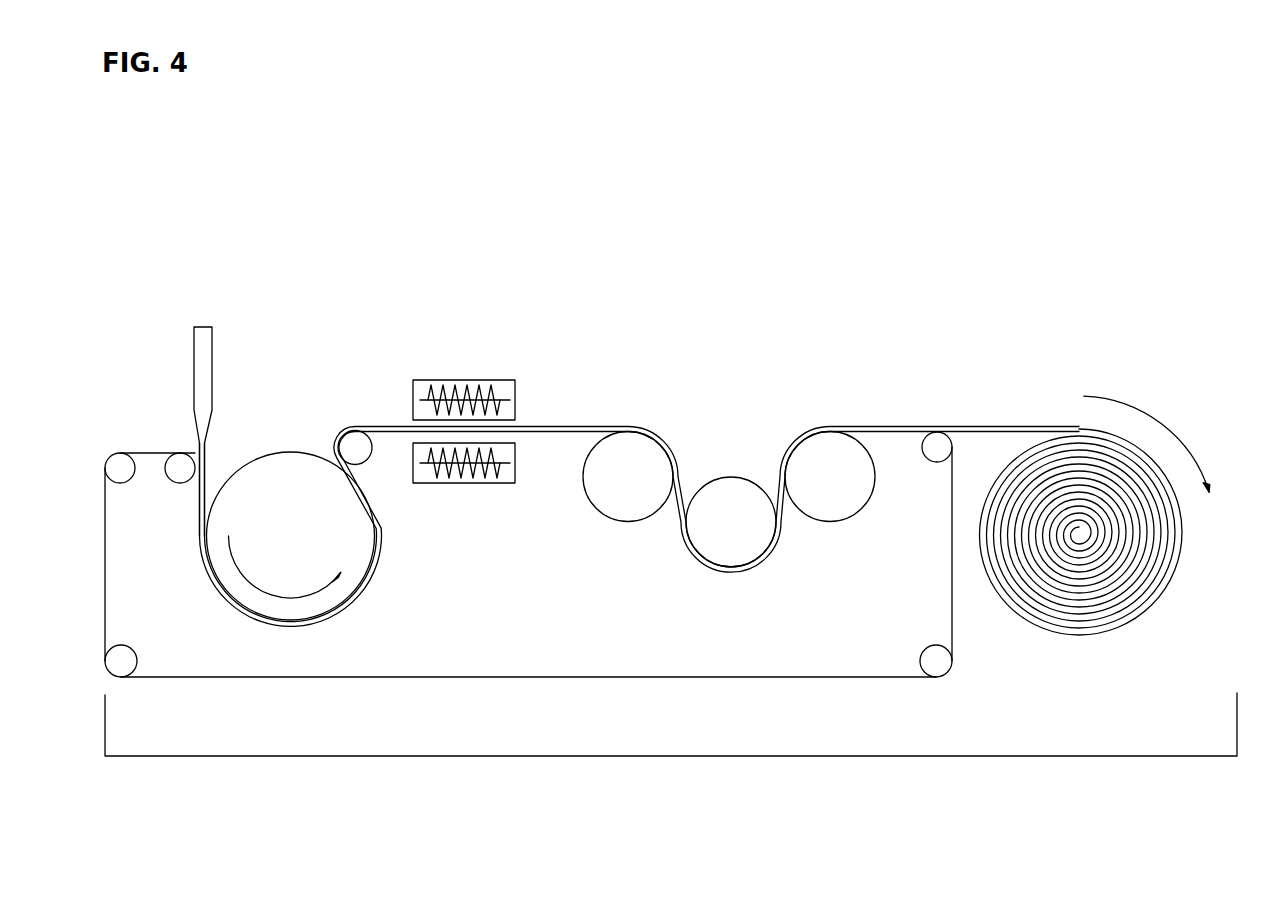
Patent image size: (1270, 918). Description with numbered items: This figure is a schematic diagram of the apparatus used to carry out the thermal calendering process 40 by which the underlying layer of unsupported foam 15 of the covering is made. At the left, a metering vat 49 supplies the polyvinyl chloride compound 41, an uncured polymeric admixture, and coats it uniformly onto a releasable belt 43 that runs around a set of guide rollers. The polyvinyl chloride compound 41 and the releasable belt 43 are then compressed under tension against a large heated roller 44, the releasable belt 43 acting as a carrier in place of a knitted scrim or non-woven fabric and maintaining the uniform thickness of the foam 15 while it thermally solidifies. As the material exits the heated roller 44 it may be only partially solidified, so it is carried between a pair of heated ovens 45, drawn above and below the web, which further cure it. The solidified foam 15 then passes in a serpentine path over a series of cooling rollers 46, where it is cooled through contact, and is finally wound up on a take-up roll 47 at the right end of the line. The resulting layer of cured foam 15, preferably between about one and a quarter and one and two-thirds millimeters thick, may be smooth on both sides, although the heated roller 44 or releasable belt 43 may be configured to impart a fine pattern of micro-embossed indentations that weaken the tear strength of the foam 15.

The thermal calendering process 40 is at (621, 756).
The unsupported foam 15 is at (558, 427).
The polyvinyl chloride compound 41 is at (205, 473).
The releasable belt 43 is at (160, 452).
The heated roller 44 is at (272, 541).
The heated ovens 45 is at (468, 380).
The cooling rollers 46 is at (617, 486).
The take-up roll 47 is at (1178, 547).
The metering vat 49 is at (212, 362).